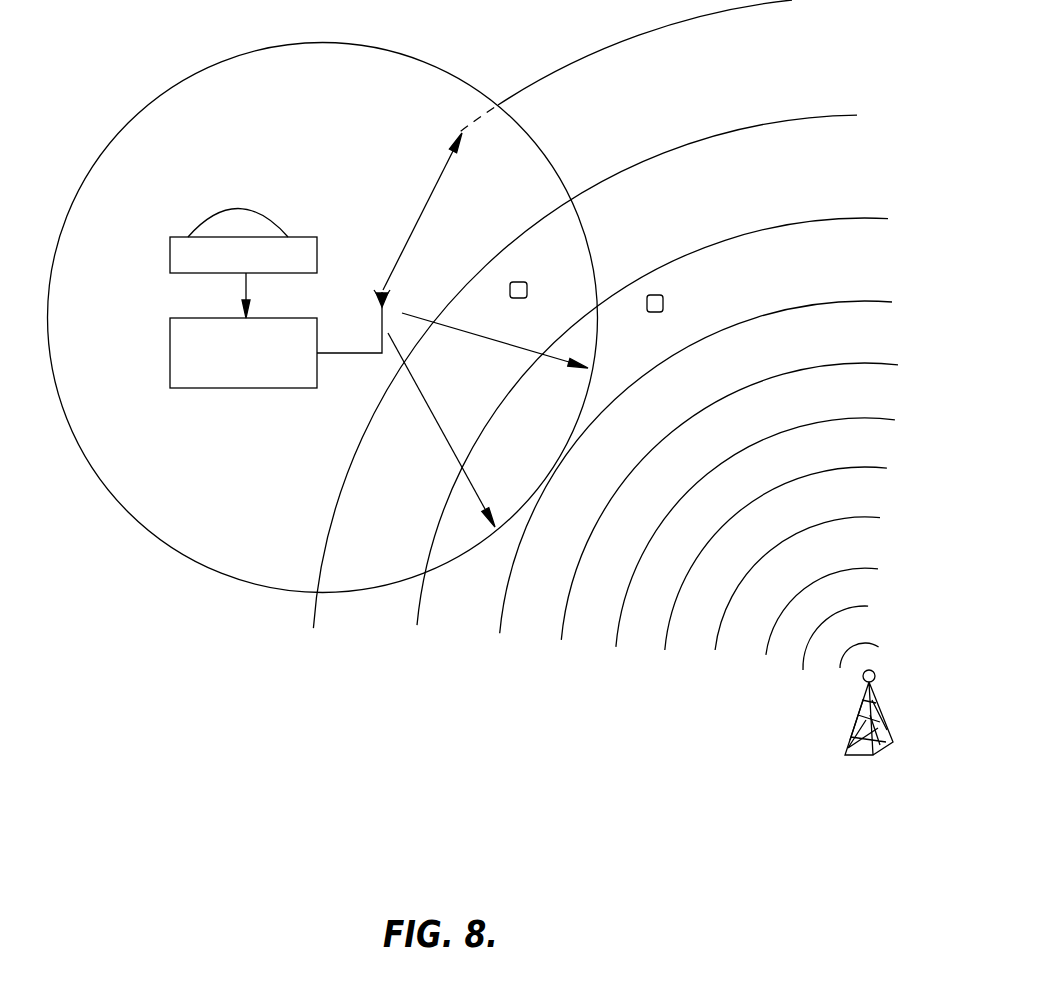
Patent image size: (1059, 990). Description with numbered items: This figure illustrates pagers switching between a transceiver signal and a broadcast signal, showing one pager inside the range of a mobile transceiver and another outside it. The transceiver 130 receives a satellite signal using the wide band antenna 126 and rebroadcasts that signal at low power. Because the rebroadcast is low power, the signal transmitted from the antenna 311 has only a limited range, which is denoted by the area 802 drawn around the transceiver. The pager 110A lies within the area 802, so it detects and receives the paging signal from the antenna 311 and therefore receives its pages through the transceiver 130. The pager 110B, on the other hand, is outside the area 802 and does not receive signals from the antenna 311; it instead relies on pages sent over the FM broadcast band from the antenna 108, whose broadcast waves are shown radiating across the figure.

The area 802 is at (415, 60).
The wide band antenna 126 is at (295, 237).
The transceiver 130 is at (277, 318).
The antenna 311 is at (382, 326).
The pager 110A is at (517, 282).
The pager 110B is at (660, 295).
The antenna 108 is at (862, 705).